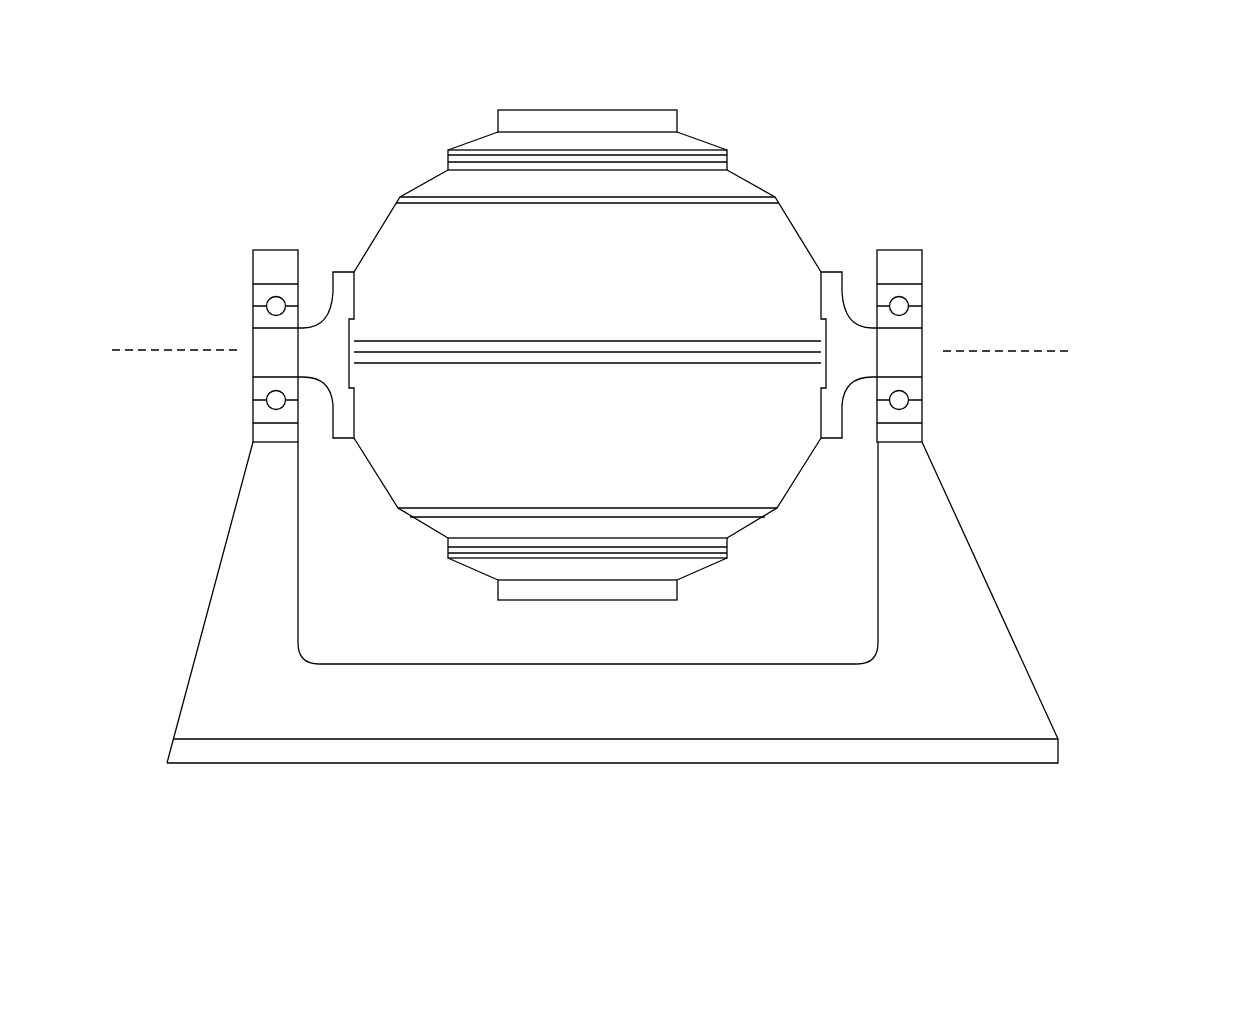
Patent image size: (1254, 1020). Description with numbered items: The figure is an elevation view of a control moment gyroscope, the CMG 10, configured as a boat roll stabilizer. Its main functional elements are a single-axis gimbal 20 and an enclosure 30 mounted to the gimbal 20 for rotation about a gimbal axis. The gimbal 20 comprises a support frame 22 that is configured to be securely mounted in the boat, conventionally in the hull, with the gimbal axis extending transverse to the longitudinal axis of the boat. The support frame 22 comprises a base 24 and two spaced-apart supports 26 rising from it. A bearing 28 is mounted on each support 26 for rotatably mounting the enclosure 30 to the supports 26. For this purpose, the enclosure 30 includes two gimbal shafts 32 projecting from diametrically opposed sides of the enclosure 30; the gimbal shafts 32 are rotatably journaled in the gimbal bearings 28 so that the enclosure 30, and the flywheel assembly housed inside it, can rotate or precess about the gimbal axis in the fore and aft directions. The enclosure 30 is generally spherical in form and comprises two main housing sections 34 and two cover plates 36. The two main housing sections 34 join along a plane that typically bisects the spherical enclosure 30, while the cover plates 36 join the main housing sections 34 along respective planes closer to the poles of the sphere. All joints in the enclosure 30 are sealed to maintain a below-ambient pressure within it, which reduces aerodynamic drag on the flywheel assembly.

The CMG 10 is at (908, 80).
The single-axis gimbal 20 is at (1142, 362).
The support frame 22 is at (1048, 682).
The base 24 is at (785, 765).
The supports 26 is at (238, 560).
The bearing 28 is at (262, 295).
The enclosure 30 is at (787, 178).
The gimbal shafts 32 is at (273, 347).
The main housing sections 34 is at (578, 287).
The cover plates 36 is at (515, 141).